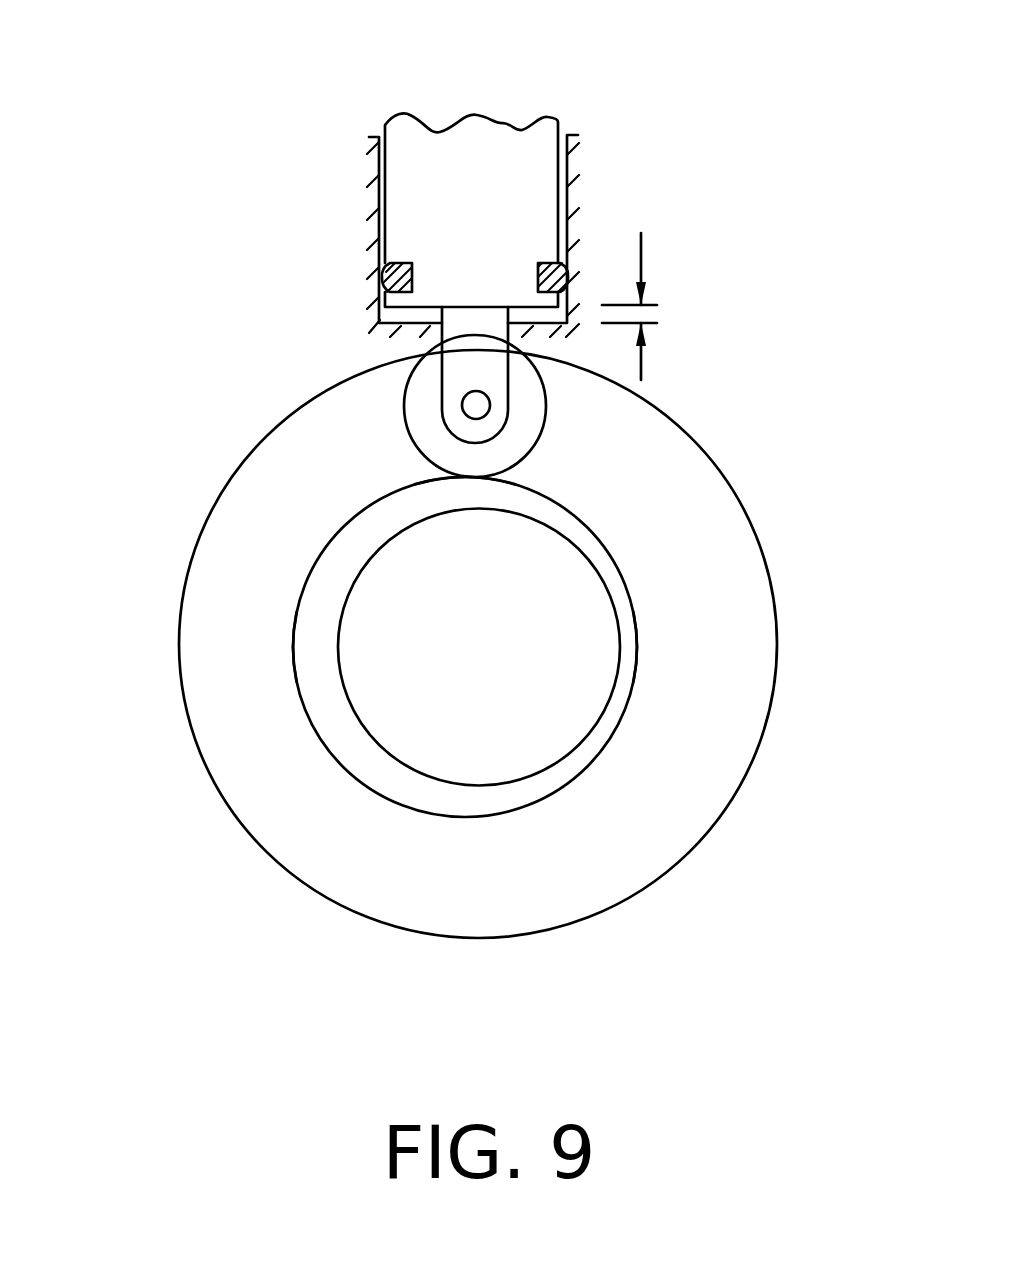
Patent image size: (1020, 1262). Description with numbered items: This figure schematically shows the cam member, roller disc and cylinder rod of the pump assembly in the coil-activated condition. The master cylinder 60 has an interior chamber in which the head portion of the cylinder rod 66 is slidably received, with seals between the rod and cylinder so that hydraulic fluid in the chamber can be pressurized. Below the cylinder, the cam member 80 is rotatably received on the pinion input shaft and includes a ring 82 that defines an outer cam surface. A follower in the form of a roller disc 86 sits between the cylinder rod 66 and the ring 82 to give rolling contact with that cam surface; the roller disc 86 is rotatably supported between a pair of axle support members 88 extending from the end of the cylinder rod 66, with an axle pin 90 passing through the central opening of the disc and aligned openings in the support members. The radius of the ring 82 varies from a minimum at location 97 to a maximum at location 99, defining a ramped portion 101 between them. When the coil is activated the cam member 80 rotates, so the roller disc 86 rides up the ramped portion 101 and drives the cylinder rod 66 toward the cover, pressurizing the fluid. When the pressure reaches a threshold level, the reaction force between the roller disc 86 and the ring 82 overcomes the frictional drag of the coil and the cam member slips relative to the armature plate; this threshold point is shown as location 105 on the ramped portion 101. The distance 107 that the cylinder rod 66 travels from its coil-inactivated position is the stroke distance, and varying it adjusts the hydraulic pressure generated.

The master cylinder 60 is at (377, 179).
The cylinder rod 66 is at (488, 154).
The cam member 80 is at (298, 449).
The ring 82 is at (330, 717).
The follower (roller disc) 86 is at (523, 432).
The axle support members 88 is at (483, 372).
The axle pin 90 is at (491, 403).
The minimum radius location 97 is at (638, 642).
The maximum radius location 99 is at (292, 646).
The ramped portion 101 is at (587, 522).
The threshold location 105 is at (470, 478).
The stroke distance 107 is at (641, 233).